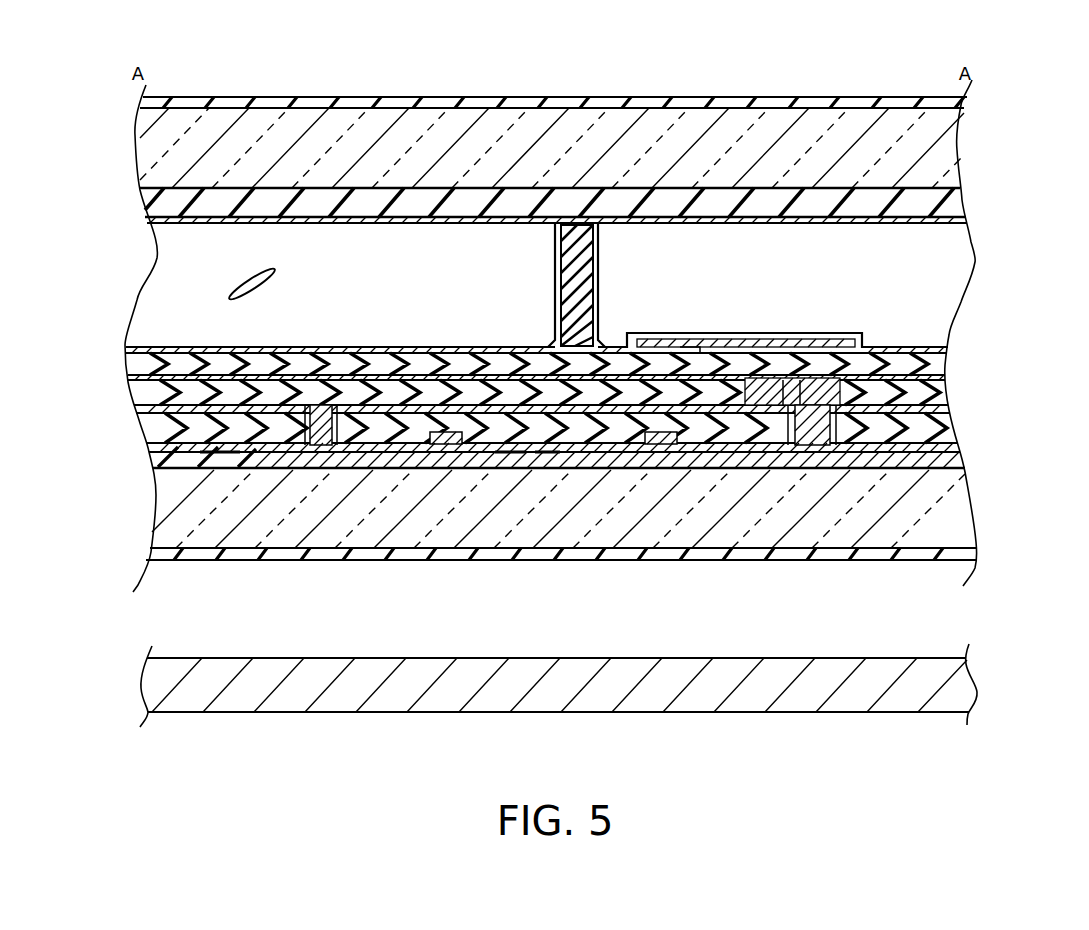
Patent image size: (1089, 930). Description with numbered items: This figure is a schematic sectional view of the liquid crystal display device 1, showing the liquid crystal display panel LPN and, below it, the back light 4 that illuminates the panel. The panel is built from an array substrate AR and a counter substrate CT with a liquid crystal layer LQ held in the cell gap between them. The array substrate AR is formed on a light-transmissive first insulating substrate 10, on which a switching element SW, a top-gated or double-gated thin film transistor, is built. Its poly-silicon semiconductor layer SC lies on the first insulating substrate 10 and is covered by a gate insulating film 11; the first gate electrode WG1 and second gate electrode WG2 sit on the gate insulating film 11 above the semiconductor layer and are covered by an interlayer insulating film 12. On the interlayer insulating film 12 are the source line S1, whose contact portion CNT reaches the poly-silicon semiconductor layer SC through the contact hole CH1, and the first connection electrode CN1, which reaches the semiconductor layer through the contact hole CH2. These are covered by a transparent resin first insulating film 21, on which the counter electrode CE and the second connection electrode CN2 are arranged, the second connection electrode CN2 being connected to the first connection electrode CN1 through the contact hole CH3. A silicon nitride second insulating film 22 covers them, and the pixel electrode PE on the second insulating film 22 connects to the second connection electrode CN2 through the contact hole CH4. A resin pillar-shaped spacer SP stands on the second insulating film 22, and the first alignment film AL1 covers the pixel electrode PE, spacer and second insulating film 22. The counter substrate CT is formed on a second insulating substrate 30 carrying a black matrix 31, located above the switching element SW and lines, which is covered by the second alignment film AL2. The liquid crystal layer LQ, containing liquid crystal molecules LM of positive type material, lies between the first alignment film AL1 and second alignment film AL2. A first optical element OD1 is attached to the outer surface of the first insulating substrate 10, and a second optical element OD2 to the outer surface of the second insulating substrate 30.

The liquid crystal display device 1 is at (772, 55).
The counter substrate CT is at (128, 160).
The second optical element OD2 is at (962, 100).
The second insulating substrate 30 is at (957, 147).
The black matrix 31 is at (963, 204).
The second alignment film AL2 is at (965, 222).
The liquid crystal layer LQ is at (155, 283).
The liquid crystal molecule LM is at (233, 282).
The pillar-shaped spacer SP is at (560, 295).
The array substrate AR is at (150, 503).
The first alignment film AL1 is at (950, 347).
The pixel electrode PE is at (832, 339).
The second insulating film 22 is at (950, 362).
The first insulating film 21 is at (955, 405).
The interlayer insulating film 12 is at (958, 432).
The gate insulating film 11 is at (963, 458).
The first insulating substrate 10 is at (965, 498).
The first optical element OD1 is at (974, 550).
The counter electrode CE is at (262, 356).
The contact portion CNT is at (318, 438).
The contact hole CH1 is at (330, 447).
The contact hole CH2 is at (820, 447).
The contact hole CH3 is at (755, 378).
The contact hole CH4 is at (696, 350).
The first connection electrode CN1 is at (790, 447).
The second connection electrode CN2 is at (788, 375).
The first gate electrode WG1 is at (446, 446).
The second gate electrode WG2 is at (660, 446).
The poly-silicon semiconductor layer SC is at (507, 456).
The source line S1 is at (212, 456).
The switching element SW is at (590, 480).
The liquid crystal display panel LPN is at (150, 552).
The back light 4 is at (150, 684).